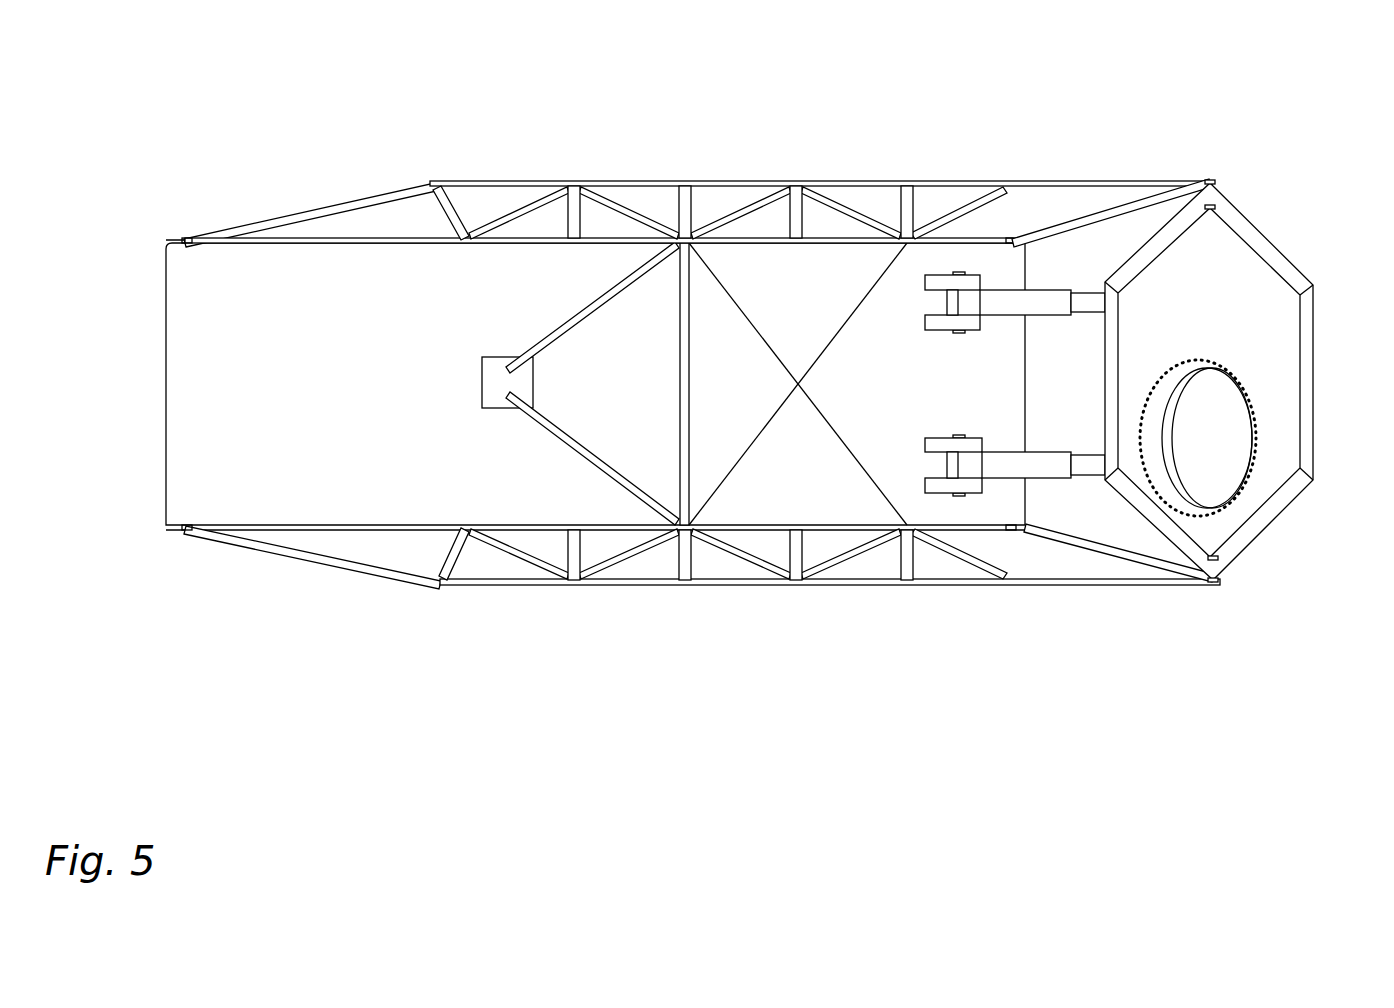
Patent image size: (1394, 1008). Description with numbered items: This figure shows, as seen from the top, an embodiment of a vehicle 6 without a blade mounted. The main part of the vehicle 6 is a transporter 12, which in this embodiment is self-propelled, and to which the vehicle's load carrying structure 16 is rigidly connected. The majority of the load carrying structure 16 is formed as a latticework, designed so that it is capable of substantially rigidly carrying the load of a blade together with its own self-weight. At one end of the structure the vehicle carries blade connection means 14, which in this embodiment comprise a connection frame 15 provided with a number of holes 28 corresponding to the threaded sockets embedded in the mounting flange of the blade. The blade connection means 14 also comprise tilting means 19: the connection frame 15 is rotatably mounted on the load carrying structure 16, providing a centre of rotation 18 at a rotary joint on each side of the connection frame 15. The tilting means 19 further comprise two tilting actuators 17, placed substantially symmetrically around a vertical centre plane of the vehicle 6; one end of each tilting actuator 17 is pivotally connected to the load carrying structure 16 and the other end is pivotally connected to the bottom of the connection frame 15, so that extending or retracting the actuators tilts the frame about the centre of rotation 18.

The vehicle 6 is at (236, 148).
The transporter 12 is at (268, 487).
The blade connection means 14 is at (1253, 555).
The connection frame 15 is at (1238, 277).
The load carrying structure 16 is at (847, 182).
The tilting actuators 17 is at (1047, 467).
The centre of rotation 18 is at (1217, 187).
The tilting means 19 is at (1113, 247).
The holes 28 is at (1253, 465).